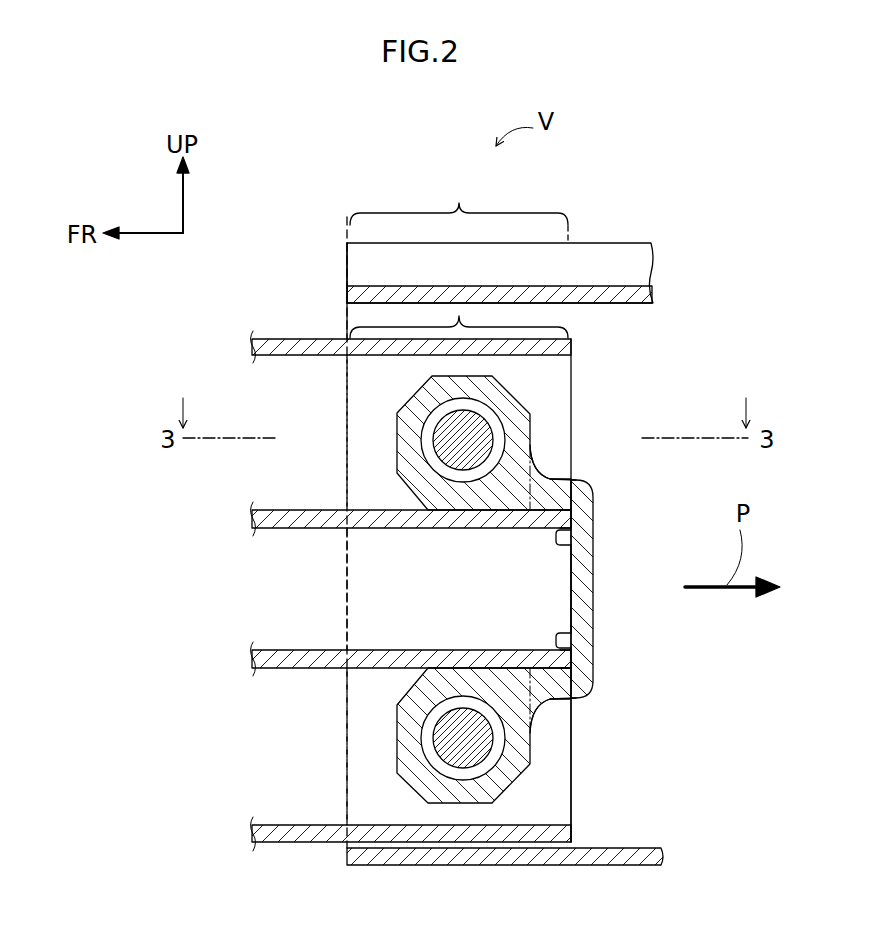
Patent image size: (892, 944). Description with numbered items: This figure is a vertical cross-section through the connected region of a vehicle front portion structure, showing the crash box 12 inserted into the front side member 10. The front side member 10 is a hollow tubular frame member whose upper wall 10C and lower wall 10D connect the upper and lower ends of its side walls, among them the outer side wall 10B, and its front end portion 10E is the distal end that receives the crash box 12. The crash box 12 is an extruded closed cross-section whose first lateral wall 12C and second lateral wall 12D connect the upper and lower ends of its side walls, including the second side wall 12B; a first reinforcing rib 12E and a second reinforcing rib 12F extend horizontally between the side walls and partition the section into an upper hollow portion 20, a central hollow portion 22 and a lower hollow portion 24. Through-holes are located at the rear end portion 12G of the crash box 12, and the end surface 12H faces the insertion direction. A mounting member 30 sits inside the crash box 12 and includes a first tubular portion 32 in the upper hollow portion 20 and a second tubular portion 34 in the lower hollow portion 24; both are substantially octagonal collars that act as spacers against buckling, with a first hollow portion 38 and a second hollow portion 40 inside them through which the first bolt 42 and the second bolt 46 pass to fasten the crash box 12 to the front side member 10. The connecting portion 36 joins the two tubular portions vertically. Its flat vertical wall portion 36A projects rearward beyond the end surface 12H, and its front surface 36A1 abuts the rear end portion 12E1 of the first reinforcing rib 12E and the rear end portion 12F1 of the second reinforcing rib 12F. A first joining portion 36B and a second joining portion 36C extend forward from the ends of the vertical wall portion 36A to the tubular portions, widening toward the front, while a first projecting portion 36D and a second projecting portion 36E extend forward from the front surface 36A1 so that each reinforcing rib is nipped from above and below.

The front side member 10 is at (556, 192).
The outer side wall 10B is at (633, 866).
The upper wall 10C is at (592, 286).
The lower wall 10D is at (556, 866).
The front end portion 10E is at (459, 207).
The crash box 12 is at (262, 258).
The second side wall 12B is at (556, 376).
The first lateral wall 12C is at (290, 339).
The second lateral wall 12D is at (290, 843).
The first reinforcing rib 12E is at (272, 504).
The rear end portion of first reinforcing rib 12E1 is at (574, 518).
The second reinforcing rib 12F is at (294, 673).
The rear end portion of second reinforcing rib 12F1 is at (574, 662).
The rear end portion 12G is at (462, 313).
The end surface 12H is at (572, 770).
The upper hollow portion 20 is at (294, 450).
The central hollow portion 22 is at (294, 600).
The lower hollow portion 24 is at (294, 780).
The mounting member 30 is at (676, 366).
The first tubular portion 32 is at (518, 412).
The second tubular portion 34 is at (477, 796).
The connecting portion 36 is at (626, 653).
The vertical wall portion 36A is at (602, 604).
The front surface 36A1 is at (571, 583).
The first joining portion 36B is at (553, 478).
The second joining portion 36C is at (556, 702).
The first projecting portion 36D is at (556, 538).
The second projecting portion 36E is at (556, 640).
The first hollow portion 38 is at (500, 441).
The second hollow portion 40 is at (440, 768).
The first bolt 42 is at (432, 418).
The second bolt 46 is at (406, 712).